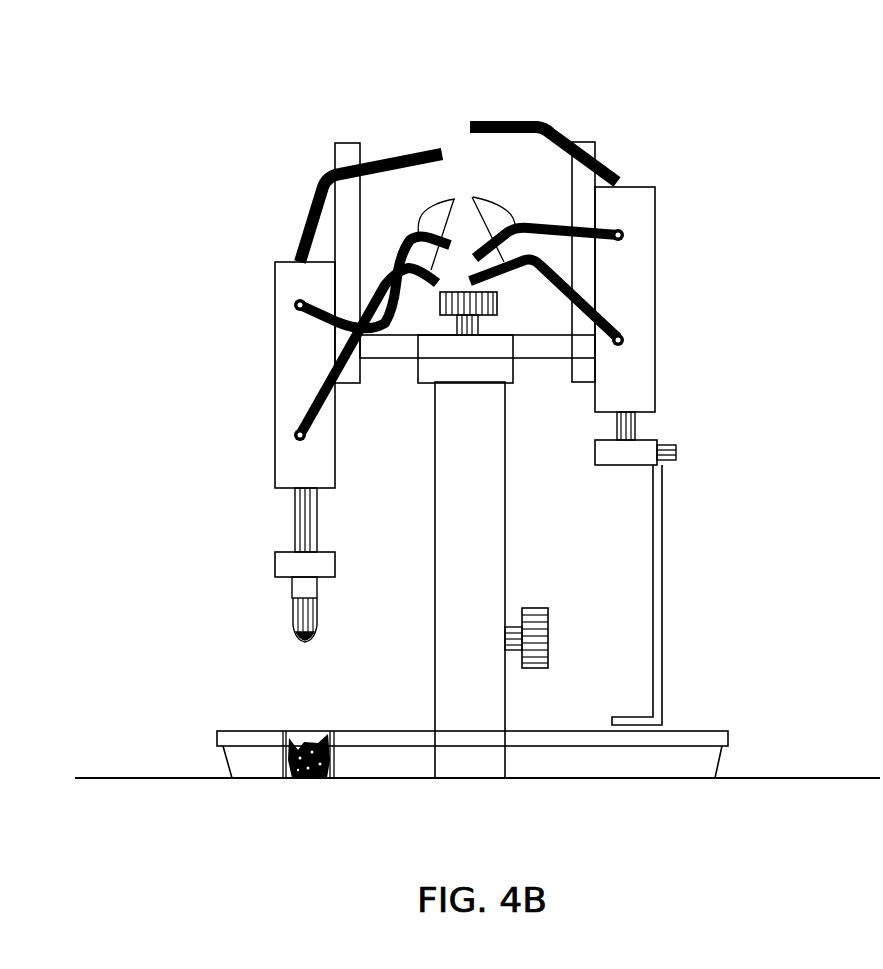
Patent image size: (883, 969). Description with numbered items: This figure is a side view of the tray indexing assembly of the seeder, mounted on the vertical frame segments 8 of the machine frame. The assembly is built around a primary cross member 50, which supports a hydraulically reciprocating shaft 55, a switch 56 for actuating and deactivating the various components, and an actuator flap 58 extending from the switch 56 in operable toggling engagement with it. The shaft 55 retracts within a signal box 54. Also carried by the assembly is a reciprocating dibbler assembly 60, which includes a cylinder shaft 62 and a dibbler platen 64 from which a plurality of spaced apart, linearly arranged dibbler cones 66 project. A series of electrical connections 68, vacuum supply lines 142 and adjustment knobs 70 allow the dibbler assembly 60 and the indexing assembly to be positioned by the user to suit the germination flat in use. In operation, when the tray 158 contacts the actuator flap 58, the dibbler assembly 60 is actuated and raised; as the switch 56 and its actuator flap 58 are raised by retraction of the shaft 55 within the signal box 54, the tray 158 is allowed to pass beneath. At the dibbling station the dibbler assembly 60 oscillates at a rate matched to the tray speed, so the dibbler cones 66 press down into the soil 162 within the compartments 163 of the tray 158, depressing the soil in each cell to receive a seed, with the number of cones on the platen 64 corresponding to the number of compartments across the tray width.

The vacuum supply lines 142 is at (541, 118).
The electrical connections 68 is at (466, 215).
The reciprocating dibbler assembly 60 is at (288, 262).
The signal box 54 is at (652, 330).
The hydraulically reciprocating shaft 55 is at (635, 427).
The switch 56 is at (647, 455).
The actuator flap 58 is at (662, 643).
The primary cross member 50 is at (388, 355).
The vertical frame segments 8 is at (487, 583).
The adjustment knobs 70 is at (487, 307).
The cylinder shaft 62 is at (298, 524).
The dibbler platen 64 is at (280, 565).
The dibbler cones 66 is at (318, 636).
The tray 158 is at (382, 770).
The soil 162 is at (303, 780).
The compartments 163 is at (293, 731).